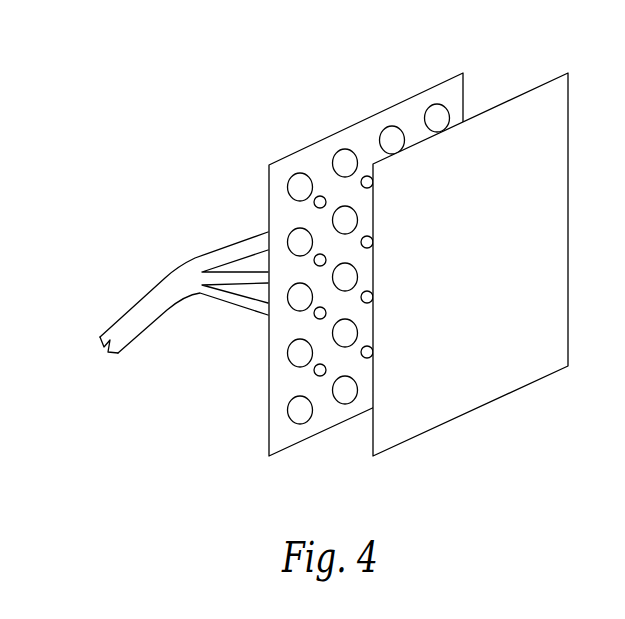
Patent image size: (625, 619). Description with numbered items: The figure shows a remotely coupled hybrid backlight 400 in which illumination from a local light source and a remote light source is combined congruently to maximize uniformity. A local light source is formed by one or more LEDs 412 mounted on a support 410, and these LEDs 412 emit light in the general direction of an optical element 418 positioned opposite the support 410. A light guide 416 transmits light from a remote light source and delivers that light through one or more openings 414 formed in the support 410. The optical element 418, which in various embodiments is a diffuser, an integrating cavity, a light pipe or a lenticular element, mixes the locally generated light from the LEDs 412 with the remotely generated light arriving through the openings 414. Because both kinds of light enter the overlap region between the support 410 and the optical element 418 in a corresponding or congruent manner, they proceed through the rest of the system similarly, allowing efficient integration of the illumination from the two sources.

The hybrid backlight 400 is at (137, 125).
The support 410 is at (327, 284).
The LEDs 412 is at (350, 393).
The openings 414 is at (316, 317).
The light guide 416 is at (157, 295).
The optical element 418 is at (532, 97).